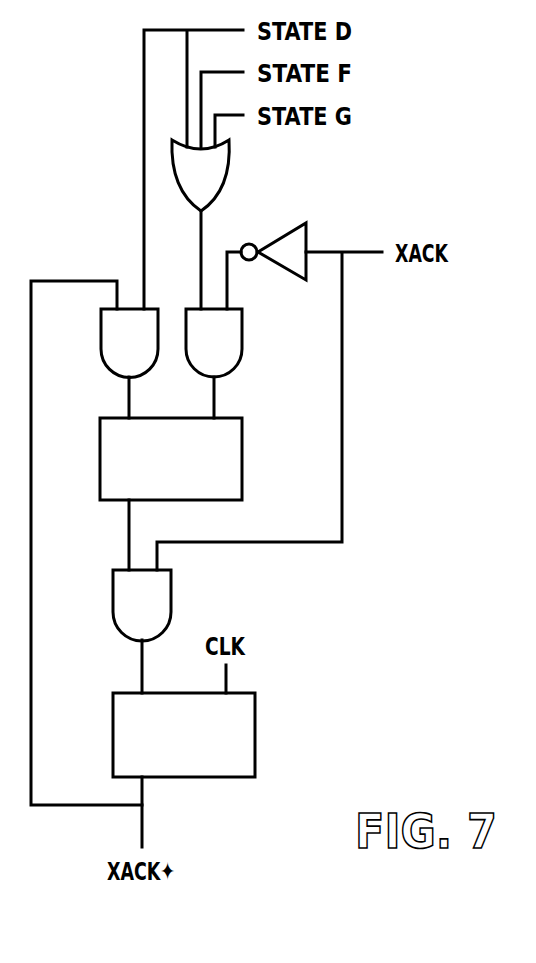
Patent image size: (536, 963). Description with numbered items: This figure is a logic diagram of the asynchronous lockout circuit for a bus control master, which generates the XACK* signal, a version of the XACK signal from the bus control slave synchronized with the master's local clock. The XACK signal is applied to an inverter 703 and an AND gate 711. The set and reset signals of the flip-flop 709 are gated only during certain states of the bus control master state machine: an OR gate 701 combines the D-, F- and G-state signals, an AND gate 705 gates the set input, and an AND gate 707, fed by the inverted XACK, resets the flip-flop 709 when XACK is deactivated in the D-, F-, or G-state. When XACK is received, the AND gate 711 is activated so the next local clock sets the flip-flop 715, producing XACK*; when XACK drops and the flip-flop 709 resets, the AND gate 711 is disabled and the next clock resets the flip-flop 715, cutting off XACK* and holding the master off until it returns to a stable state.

The OR gate 701 is at (230, 153).
The inverter 703 is at (306, 226).
The AND gate 705 is at (101, 330).
The AND gate 707 is at (242, 328).
The flip-flop 709 is at (242, 437).
The AND gate 711 is at (171, 585).
The flip-flop 715 is at (255, 710).